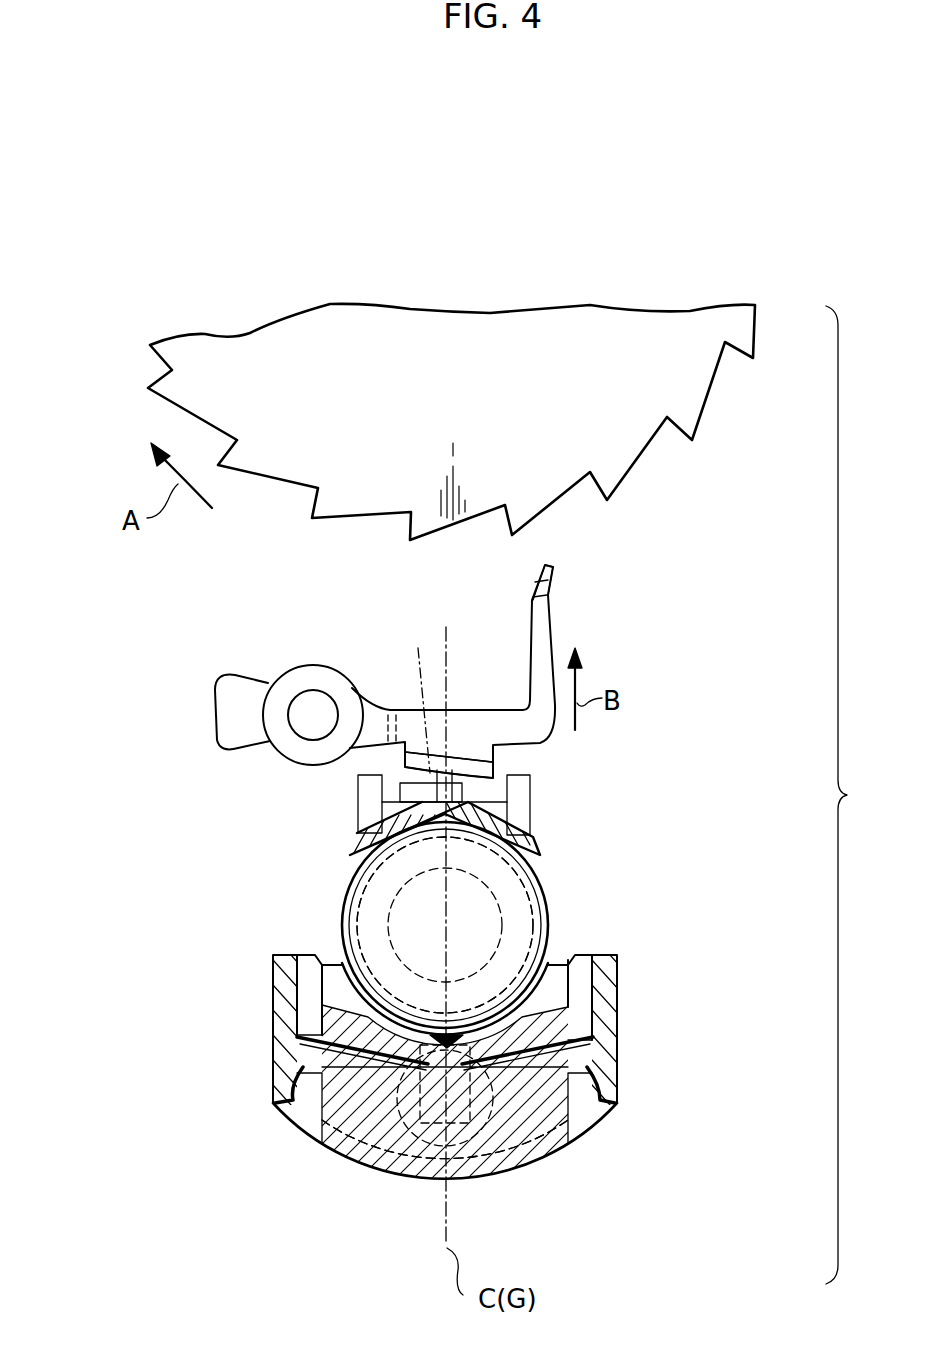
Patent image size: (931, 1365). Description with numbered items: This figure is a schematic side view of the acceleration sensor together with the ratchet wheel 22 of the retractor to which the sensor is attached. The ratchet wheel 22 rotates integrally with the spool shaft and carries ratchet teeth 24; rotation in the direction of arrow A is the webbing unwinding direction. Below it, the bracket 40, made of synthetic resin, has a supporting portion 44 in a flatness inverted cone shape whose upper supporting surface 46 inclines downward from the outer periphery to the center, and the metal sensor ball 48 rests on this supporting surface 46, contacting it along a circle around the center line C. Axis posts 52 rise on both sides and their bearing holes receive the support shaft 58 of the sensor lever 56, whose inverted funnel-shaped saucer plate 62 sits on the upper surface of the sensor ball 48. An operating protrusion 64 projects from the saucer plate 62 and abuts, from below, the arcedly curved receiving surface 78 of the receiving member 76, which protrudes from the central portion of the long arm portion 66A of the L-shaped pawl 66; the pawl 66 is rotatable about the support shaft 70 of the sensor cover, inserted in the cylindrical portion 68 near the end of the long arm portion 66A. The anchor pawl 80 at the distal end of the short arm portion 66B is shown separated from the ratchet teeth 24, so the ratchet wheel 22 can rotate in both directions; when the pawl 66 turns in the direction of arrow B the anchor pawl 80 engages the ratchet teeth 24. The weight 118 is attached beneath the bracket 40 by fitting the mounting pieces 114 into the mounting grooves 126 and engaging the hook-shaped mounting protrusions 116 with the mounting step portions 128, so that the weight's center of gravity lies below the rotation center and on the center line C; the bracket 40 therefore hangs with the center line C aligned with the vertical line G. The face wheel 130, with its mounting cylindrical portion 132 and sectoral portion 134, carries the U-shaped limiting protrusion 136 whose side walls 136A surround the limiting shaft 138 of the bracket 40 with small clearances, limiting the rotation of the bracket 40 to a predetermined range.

The ratchet wheel 22 is at (706, 404).
The ratchet teeth 24 is at (605, 472).
The bracket 40 is at (457, 1086).
The supporting portion 44 is at (615, 1030).
The supporting surface 46 is at (548, 1005).
The sensor ball 48 is at (552, 888).
The axis posts 52 is at (355, 805).
The sensor lever 56 is at (540, 848).
The support shaft 58 is at (398, 790).
The saucer plate 62 is at (489, 832).
The operating protrusion 64 is at (419, 695).
The pawl 66 is at (407, 686).
The long arm portion 66A is at (232, 750).
The short arm portion 66B is at (537, 633).
The cylindrical portion 68 is at (290, 686).
The support shaft 70 is at (321, 705).
The receiving member 76 is at (493, 753).
The receiving surface 78 is at (470, 777).
The anchor pawl 80 is at (553, 577).
The mounting piece 114 is at (285, 995).
The mounting protrusion 116 is at (300, 1046).
The weight 118 is at (482, 1177).
The mounting grooves 126 is at (297, 1035).
The mounting step portions 128 is at (293, 1112).
The face wheel 130 is at (363, 1007).
The mounting cylindrical portion 132 is at (358, 893).
The sectoral portion 134 is at (330, 1165).
The limiting protrusion 136 is at (420, 1125).
The side walls 136A is at (380, 1150).
The limiting shaft 138 is at (513, 1170).